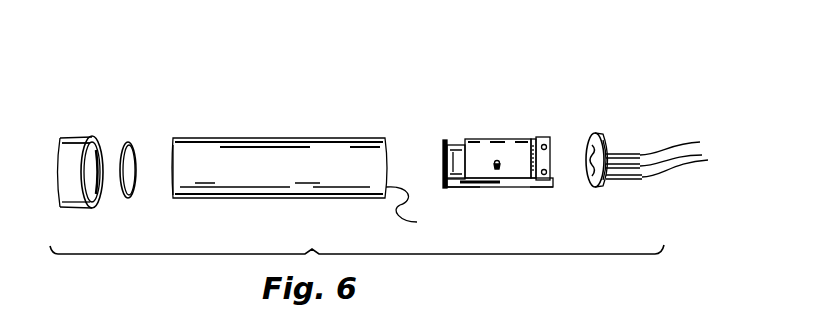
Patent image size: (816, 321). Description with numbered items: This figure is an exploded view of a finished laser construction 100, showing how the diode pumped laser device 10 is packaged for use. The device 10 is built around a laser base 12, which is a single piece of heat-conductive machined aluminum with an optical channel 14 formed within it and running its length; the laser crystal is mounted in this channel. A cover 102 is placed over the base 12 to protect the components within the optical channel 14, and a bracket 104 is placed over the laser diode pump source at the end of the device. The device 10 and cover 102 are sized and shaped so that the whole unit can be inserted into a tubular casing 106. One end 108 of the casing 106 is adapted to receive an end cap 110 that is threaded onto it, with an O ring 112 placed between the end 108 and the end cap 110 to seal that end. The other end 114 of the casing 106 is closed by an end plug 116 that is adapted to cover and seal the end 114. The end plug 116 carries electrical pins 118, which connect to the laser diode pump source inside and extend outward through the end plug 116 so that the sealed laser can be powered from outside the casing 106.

The diode pumped laser device 10 is at (478, 112).
The laser base 12 is at (465, 188).
The optical channel 14 is at (533, 182).
The finished laser construction 100 is at (374, 94).
The cover 102 is at (518, 150).
The bracket 104 is at (548, 155).
The casing 106 is at (217, 138).
The end of the casing 108 is at (170, 162).
The end cap 110 is at (72, 158).
The O ring 112 is at (130, 197).
The other end of the casing 114 is at (420, 211).
The end plug 116 is at (607, 137).
The electrical pins 118 is at (672, 156).